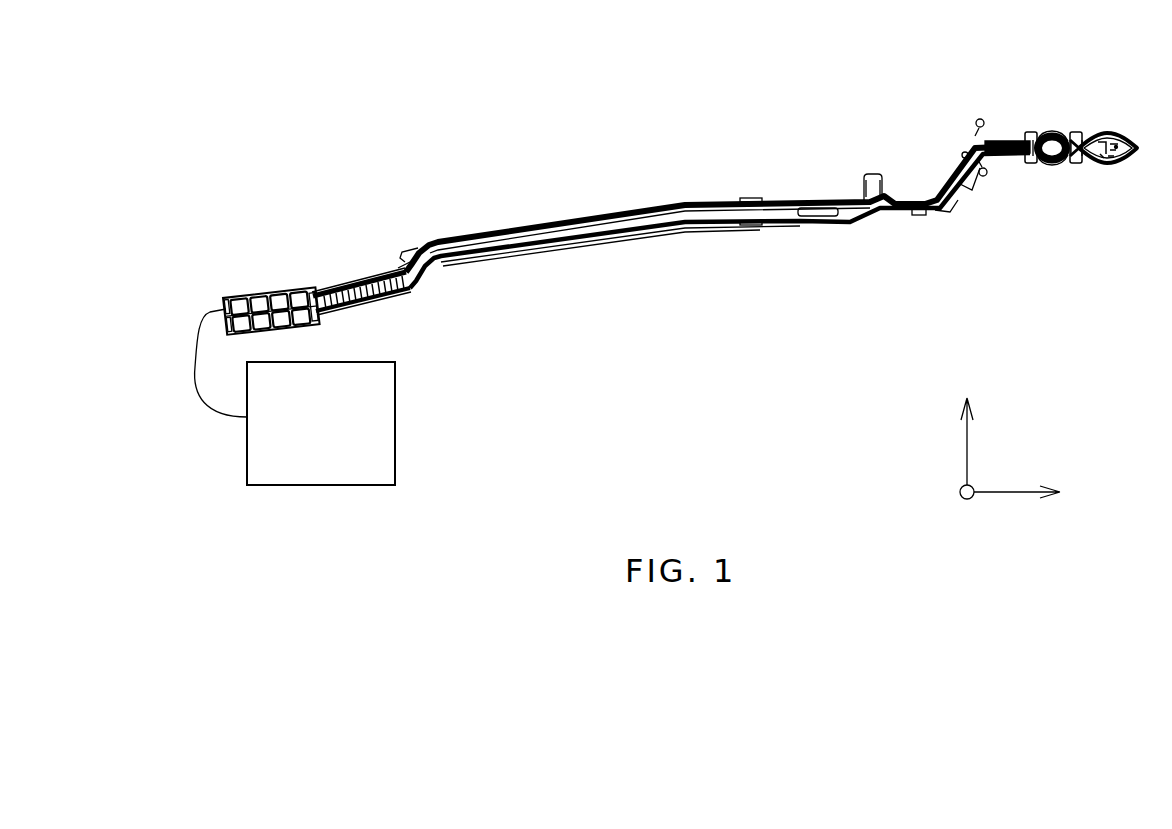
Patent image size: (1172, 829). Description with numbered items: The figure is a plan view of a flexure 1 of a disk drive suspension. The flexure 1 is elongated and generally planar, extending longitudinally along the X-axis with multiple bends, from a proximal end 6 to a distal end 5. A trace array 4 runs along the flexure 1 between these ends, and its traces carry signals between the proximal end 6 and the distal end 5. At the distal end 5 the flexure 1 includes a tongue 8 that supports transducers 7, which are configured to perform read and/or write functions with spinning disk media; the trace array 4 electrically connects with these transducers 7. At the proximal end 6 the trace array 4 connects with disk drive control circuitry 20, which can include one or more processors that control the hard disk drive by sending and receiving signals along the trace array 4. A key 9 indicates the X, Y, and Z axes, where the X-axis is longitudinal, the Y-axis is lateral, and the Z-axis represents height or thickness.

The flexure 1 is at (664, 132).
The trace array 4 is at (716, 210).
The distal end 5 is at (1064, 93).
The proximal end 6 is at (275, 252).
The transducers 7 is at (1109, 189).
The tongue 8 is at (1110, 130).
The key 9 is at (895, 485).
The disk drive control circuitry 20 is at (308, 485).